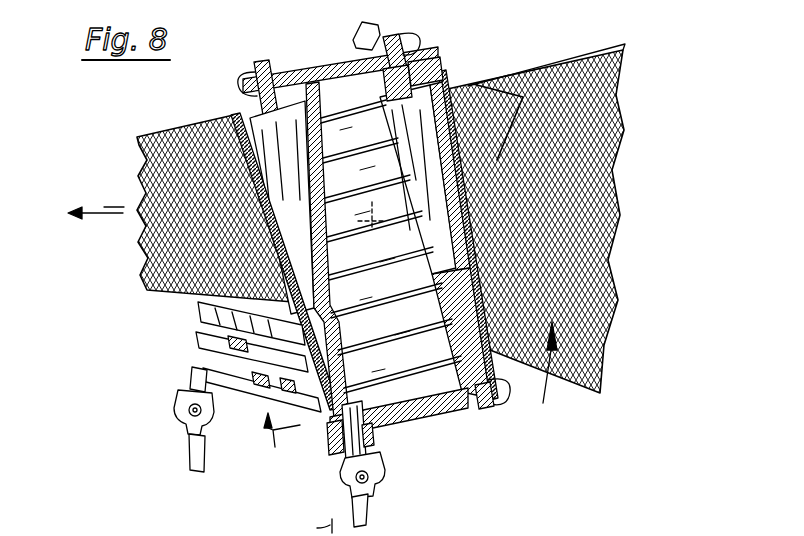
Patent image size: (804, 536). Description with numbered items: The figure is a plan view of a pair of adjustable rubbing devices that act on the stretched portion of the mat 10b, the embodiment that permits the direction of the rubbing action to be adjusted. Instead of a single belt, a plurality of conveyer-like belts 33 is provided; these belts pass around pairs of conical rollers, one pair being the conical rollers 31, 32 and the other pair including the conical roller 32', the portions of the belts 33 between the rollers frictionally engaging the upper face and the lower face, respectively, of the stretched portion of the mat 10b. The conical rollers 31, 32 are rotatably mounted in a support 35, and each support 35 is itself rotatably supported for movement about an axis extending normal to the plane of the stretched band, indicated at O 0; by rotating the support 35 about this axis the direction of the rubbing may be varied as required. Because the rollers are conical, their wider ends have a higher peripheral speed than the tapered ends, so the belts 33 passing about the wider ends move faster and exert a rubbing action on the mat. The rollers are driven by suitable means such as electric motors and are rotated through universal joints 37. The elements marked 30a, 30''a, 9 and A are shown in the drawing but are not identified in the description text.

The mat 10b is at (578, 184).
The guide bar 30a is at (322, 104).
The conical roller 31 is at (442, 74).
The conical roller 32 is at (249, 251).
The belts 33 is at (398, 237).
The support 35 is at (258, 375).
The universal joints 37 is at (186, 427).
The adjustment direction 9 is at (410, 402).
The guide bar 30''a is at (162, 318).
The conical roller 32' is at (171, 354).
The axis 0 is at (345, 365).
The direction of movement A is at (96, 202).